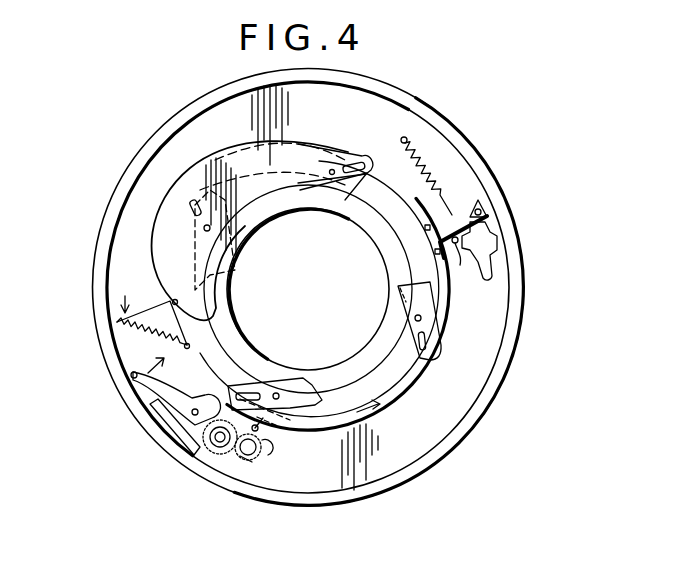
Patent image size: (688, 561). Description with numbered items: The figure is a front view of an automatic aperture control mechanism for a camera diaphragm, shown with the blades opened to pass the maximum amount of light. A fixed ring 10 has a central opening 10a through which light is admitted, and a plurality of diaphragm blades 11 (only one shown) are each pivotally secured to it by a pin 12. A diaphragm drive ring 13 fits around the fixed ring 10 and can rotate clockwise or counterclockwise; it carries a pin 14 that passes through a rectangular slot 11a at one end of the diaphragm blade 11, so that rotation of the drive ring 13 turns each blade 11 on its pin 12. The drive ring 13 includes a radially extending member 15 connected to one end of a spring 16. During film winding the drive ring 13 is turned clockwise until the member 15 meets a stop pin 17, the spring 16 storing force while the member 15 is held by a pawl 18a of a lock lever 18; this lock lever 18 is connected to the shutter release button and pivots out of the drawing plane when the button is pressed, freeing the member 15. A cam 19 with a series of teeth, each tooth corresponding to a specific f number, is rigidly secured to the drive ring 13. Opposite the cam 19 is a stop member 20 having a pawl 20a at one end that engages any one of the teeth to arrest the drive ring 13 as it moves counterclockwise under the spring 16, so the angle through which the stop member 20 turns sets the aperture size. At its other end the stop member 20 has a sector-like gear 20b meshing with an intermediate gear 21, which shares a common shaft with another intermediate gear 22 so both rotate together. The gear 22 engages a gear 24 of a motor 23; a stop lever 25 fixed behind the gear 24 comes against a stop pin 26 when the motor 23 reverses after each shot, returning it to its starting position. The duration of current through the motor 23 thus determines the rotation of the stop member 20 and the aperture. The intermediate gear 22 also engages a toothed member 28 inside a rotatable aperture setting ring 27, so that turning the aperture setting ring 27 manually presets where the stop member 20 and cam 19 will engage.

The fixed ring 10 is at (372, 358).
The central opening 10a is at (252, 230).
The diaphragm blade 11 is at (160, 250).
The rectangular slot 11a is at (366, 162).
The pin 12 is at (338, 165).
The diaphragm drive ring 13 is at (441, 325).
The pin 14 is at (357, 178).
The member 15 is at (492, 216).
The spring 16 is at (440, 178).
The stop pin 17 is at (464, 259).
The lock lever 18 is at (494, 258).
The pawl 18a is at (486, 207).
The cam 19 is at (130, 331).
The stop member 20 is at (146, 410).
The pawl 20a is at (130, 378).
The sector-like gear 20b is at (228, 400).
The intermediate gear 21 is at (212, 445).
The intermediate gear 22 is at (238, 458).
The motor 23 is at (258, 458).
The gear 24 is at (247, 463).
The stop lever 25 is at (265, 432).
The stop pin 26 is at (262, 418).
The aperture setting ring 27 is at (522, 339).
The toothed member 28 is at (165, 432).